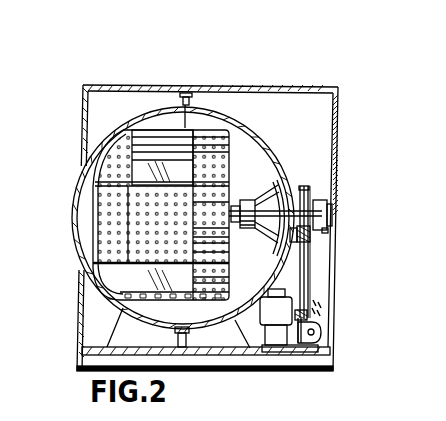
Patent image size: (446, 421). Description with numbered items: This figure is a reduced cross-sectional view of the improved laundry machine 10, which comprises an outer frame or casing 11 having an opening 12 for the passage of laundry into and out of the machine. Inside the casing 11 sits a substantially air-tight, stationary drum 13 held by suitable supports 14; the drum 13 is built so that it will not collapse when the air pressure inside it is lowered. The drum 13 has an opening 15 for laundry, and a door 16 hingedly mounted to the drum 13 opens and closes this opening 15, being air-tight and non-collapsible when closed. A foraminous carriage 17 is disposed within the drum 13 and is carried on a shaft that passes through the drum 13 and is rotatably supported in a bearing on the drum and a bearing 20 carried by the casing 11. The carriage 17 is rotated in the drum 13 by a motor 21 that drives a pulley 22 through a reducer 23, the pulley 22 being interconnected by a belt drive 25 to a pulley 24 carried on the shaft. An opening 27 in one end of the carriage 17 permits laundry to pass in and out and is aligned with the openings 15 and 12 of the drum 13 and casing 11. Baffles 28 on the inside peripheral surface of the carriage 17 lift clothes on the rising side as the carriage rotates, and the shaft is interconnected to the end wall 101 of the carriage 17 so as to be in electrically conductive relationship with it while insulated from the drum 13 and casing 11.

The laundry machine 10 is at (335, 72).
The outer frame or casing 11 is at (337, 122).
The opening 12 is at (87, 164).
The stationary drum 13 is at (237, 119).
The supports 14 is at (203, 340).
The opening 15 is at (70, 204).
The door 16 is at (73, 225).
The foraminous carriage 17 is at (142, 167).
The bearing 20 is at (325, 213).
The motor 21 is at (320, 331).
The pulley 22 is at (302, 308).
The reducer 23 is at (280, 318).
The pulley 24 is at (312, 197).
The belt drive 25 is at (311, 267).
The opening 27 is at (82, 193).
The baffles 28 is at (140, 132).
The end wall 101 is at (232, 155).